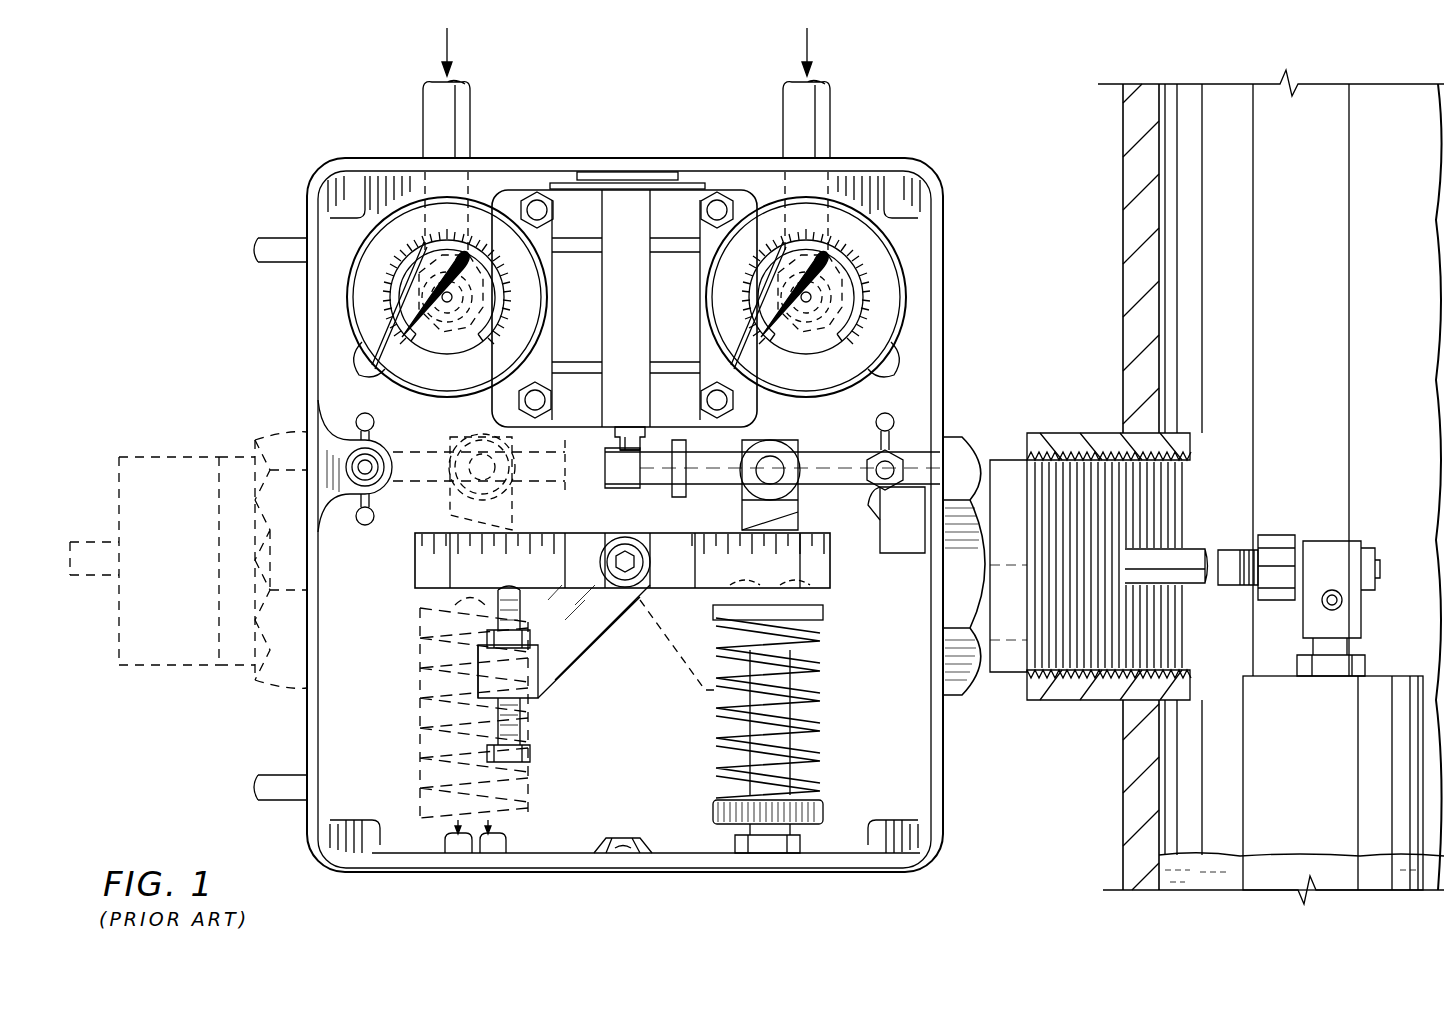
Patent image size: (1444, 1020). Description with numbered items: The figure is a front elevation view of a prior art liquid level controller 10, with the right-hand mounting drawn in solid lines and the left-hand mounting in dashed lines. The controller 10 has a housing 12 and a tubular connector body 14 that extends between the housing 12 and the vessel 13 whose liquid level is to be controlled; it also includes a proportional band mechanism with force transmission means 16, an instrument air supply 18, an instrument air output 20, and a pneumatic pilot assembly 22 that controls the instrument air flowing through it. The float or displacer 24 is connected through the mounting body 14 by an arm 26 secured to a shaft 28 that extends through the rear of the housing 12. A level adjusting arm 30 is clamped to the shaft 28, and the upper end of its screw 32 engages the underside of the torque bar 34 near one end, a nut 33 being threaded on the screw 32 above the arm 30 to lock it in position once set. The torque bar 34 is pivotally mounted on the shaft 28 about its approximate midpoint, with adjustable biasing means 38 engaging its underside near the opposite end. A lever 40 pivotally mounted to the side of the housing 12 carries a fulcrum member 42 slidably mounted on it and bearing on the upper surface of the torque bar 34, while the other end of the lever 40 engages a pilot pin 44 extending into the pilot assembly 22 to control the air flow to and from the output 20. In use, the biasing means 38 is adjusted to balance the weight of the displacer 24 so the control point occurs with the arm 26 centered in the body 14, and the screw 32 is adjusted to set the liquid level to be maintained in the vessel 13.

The controller 10 is at (268, 158).
The housing 12 is at (305, 352).
The vessel 13 is at (1123, 812).
The tubular connector body 14 is at (955, 437).
The force transmission means 16 is at (400, 572).
The instrument air supply 18 is at (423, 115).
The instrument air output 20 is at (783, 112).
The pneumatic pilot assembly 22 is at (536, 195).
The float or displacer 24 is at (1340, 782).
The arm 26 is at (1195, 565).
The shaft 28 is at (612, 545).
The level adjusting arm 30 is at (556, 680).
The screw 32 is at (520, 725).
The nut 33 is at (528, 640).
The torque bar 34 is at (415, 553).
The adjustable biasing means 38 is at (823, 725).
The lever 40 is at (640, 488).
The fulcrum member 42 is at (798, 510).
The pilot pin 44 is at (645, 440).